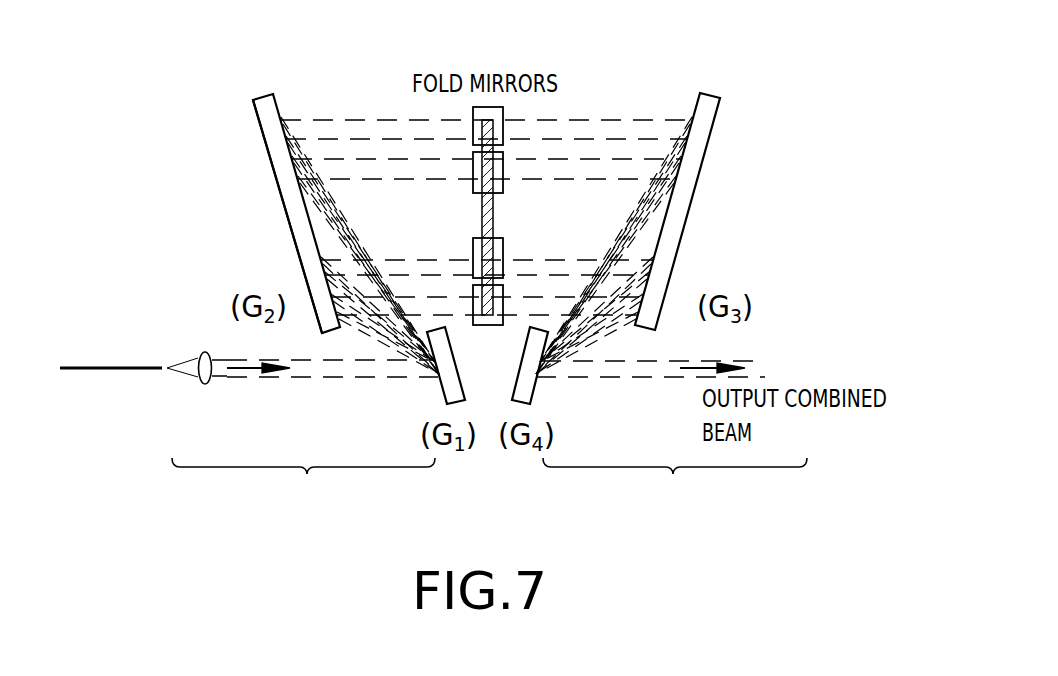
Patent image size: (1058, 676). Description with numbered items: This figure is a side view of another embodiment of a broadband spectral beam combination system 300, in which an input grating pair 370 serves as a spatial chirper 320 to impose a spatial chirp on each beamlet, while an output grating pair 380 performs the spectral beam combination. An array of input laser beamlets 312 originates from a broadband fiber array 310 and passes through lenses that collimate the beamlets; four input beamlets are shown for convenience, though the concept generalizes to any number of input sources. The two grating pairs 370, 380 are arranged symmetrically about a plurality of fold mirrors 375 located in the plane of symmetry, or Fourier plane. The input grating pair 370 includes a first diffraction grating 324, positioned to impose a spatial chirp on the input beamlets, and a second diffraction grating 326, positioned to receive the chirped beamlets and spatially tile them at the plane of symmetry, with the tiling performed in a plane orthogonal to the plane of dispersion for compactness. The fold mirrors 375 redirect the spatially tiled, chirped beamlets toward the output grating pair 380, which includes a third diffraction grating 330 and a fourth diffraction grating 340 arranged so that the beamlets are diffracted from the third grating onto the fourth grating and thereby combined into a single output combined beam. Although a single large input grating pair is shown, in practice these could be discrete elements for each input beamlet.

The broadband SBC system 300 is at (170, 97).
The broadband fiber array 310 is at (103, 367).
The input laser beamlets 312 is at (243, 377).
The spatial chirper 320 is at (338, 120).
The first diffraction grating 324 is at (447, 402).
The second diffraction grating 326 is at (279, 190).
The third diffraction grating 330 is at (720, 102).
The fourth diffraction grating 340 is at (530, 402).
The input grating pair 370 is at (303, 490).
The fold mirrors 375 is at (503, 190).
The output grating pair 380 is at (675, 490).